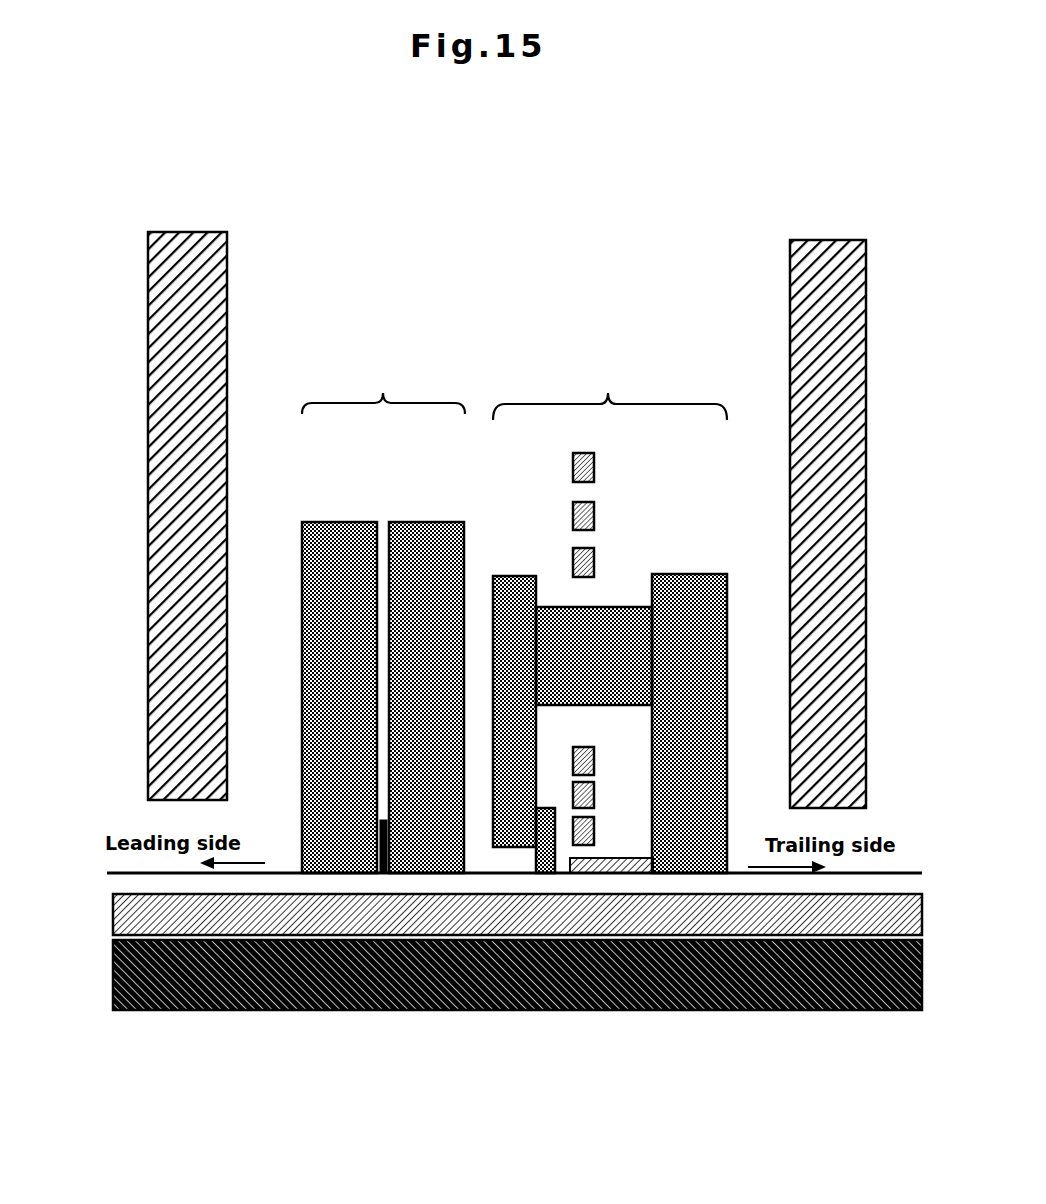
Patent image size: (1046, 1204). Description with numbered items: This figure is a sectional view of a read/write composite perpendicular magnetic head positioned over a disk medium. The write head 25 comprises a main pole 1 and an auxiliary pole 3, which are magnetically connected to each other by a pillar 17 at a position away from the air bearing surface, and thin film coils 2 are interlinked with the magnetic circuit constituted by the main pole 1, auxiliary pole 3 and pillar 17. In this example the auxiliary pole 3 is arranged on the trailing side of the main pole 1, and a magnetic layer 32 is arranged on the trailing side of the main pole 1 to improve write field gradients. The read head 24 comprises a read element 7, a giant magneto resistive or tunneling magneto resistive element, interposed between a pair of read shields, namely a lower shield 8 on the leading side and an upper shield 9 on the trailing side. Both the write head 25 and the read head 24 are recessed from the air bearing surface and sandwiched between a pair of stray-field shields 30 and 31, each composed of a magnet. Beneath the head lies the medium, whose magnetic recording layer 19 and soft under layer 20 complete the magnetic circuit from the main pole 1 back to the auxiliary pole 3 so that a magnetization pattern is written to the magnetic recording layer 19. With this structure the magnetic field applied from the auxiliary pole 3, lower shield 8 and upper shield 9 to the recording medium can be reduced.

The main pole 1 is at (508, 576).
The thin film coils 2 is at (594, 470).
The auxiliary pole 3 is at (685, 580).
The read element 7 is at (380, 840).
The lower shield 8 is at (328, 522).
The upper shield 9 is at (414, 522).
The pillar 17 is at (603, 607).
The magnetic recording layer 19 is at (113, 918).
The soft under layer 20 is at (113, 978).
The read head 24 is at (383, 386).
The write head 25 is at (610, 389).
The stray-field shield 30 is at (227, 304).
The stray-field shield 31 is at (790, 293).
The magnetic layer 32 is at (612, 858).